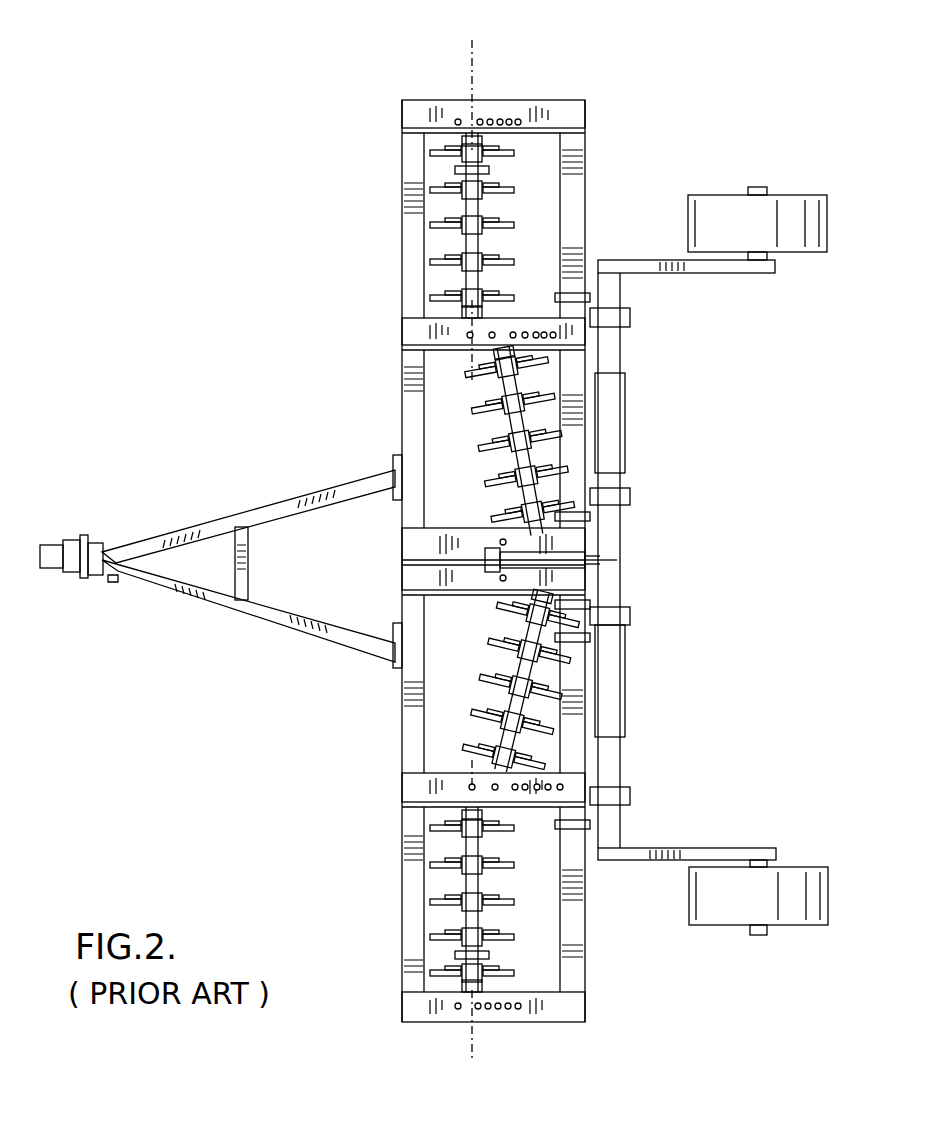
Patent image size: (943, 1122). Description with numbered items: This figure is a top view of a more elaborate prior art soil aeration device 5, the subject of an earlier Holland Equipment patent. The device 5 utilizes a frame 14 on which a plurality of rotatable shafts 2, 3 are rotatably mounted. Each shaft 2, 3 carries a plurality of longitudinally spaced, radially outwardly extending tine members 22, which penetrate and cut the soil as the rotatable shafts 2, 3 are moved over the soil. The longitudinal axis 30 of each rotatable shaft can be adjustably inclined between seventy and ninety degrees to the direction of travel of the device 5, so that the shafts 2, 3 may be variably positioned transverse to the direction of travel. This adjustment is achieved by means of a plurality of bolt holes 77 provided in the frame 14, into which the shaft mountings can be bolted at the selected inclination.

The rotatable shaft 2 is at (515, 669).
The rotatable shaft 3 is at (484, 232).
The prior art device 5 is at (288, 428).
The frame 14 is at (403, 741).
The tine members 22 is at (504, 187).
The longitudinal axis 30 is at (474, 56).
The adjustment holes 77 is at (514, 120).